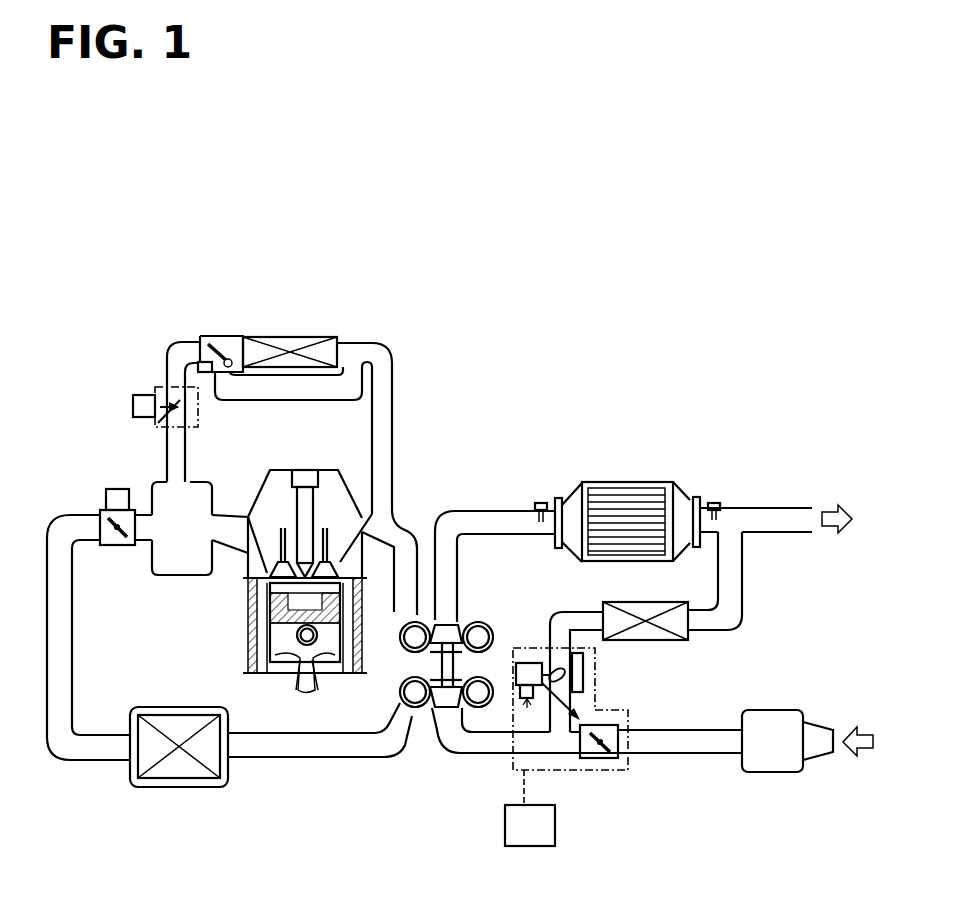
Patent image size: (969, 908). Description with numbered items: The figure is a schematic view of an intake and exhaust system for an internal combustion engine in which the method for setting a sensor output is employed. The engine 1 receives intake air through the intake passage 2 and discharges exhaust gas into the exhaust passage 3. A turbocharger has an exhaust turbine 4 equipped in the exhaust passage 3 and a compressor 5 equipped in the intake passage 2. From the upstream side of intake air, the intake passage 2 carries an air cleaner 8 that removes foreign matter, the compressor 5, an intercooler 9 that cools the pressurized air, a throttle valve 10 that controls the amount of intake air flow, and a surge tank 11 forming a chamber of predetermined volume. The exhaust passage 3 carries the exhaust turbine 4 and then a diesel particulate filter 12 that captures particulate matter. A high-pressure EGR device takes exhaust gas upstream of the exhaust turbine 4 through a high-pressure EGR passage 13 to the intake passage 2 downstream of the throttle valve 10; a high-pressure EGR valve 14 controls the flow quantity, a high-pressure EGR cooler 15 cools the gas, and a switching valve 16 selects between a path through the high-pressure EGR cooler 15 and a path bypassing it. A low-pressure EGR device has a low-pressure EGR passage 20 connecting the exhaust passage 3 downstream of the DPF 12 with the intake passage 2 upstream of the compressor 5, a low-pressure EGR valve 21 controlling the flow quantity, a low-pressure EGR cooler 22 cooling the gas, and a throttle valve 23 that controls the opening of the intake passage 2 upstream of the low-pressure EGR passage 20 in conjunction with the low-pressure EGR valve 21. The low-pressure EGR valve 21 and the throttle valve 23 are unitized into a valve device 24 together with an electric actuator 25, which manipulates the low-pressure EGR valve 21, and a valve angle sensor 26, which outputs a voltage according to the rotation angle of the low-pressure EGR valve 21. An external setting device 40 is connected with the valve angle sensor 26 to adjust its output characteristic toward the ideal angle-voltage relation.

The engine 1 is at (357, 484).
The intake passage 2 is at (302, 760).
The exhaust passage 3 is at (482, 521).
The exhaust turbine 4 is at (462, 622).
The compressor 5 is at (440, 700).
The air cleaner 8 is at (770, 760).
The intercooler 9 is at (181, 766).
The throttle valve 10 is at (122, 545).
The surge tank 11 is at (180, 570).
The diesel particulate filter (DPF) 12 is at (630, 495).
The high-pressure EGR passage 13 is at (172, 367).
The high-pressure EGR valve 14 is at (165, 423).
The high-pressure EGR cooler 15 is at (308, 338).
The switching valve 16 is at (226, 343).
The low-pressure EGR passage 20 is at (718, 622).
The low-pressure EGR valve 21 is at (580, 690).
The low-pressure EGR cooler 22 is at (657, 633).
The throttle valve 23 is at (603, 760).
The valve device 24 is at (573, 772).
The electric actuator 25 is at (527, 665).
The valve angle sensor 26 is at (518, 699).
The setting device 40 is at (518, 837).